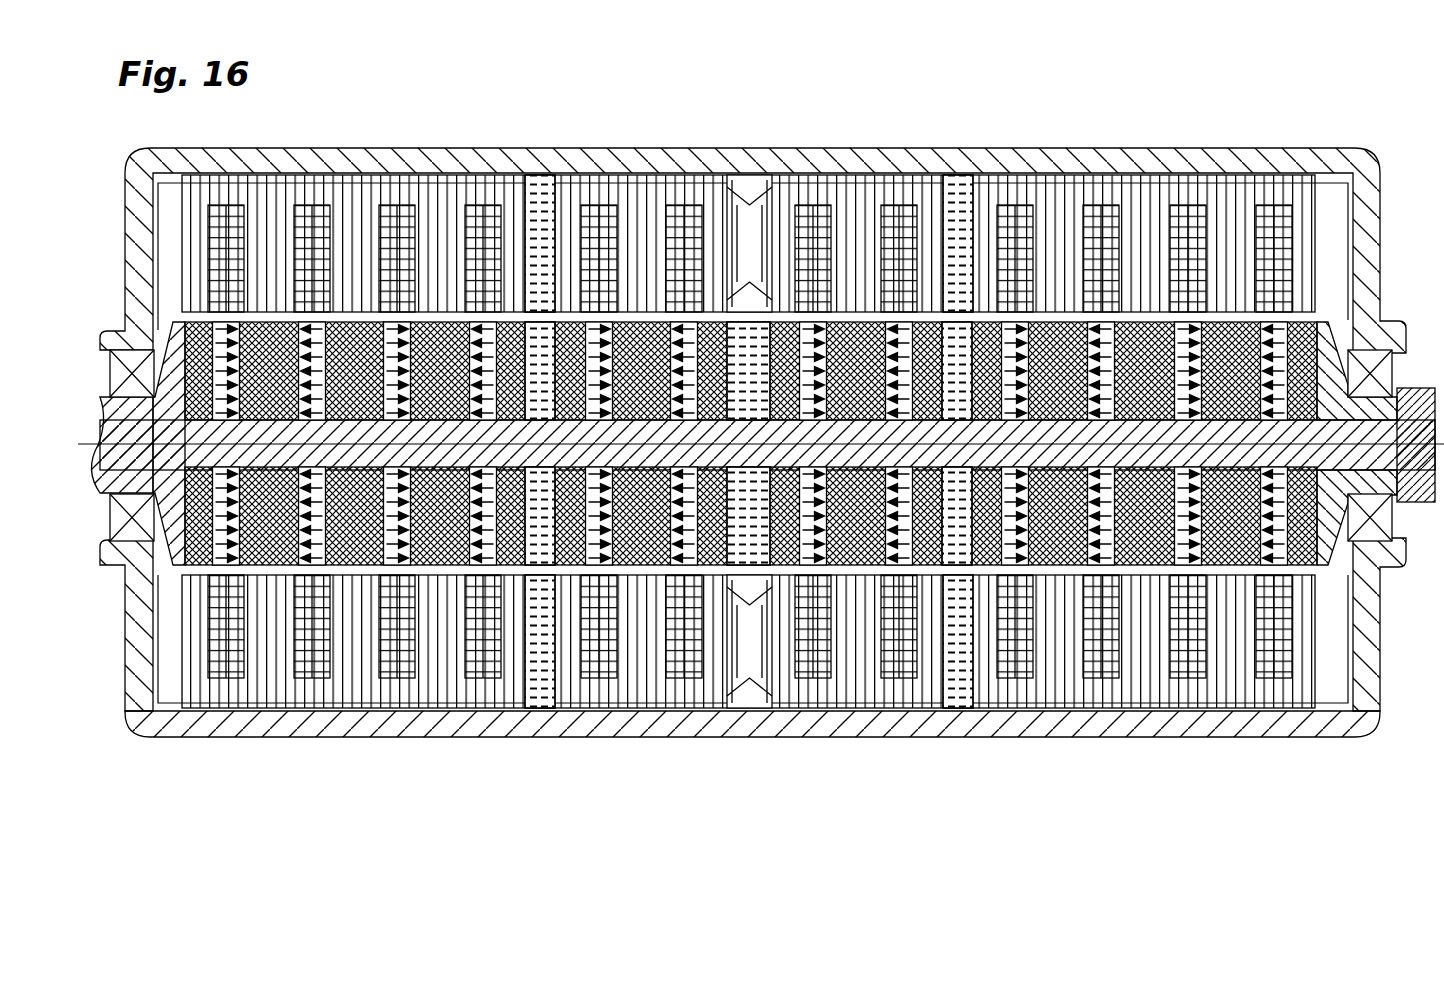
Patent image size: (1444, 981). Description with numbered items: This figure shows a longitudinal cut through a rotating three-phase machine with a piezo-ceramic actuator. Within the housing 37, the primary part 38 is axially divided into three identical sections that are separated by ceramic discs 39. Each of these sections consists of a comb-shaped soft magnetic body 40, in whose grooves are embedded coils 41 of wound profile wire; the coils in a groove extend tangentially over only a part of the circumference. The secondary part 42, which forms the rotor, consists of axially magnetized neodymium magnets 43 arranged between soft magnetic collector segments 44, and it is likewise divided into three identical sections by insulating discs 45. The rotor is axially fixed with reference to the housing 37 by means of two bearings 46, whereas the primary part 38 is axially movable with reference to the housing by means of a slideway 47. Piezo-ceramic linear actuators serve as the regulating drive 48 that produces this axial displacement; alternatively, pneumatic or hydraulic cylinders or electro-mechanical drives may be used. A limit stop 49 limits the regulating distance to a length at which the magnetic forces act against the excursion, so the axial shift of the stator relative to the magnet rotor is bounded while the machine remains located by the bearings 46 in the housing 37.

The housing 37 is at (432, 160).
The primary part 38 is at (548, 175).
The ceramic discs 39 is at (962, 233).
The comb-shaped soft magnetic body 40 is at (1140, 192).
The coils 41 is at (1273, 227).
The secondary part 42 is at (325, 567).
The axially magnetized neodymium magnets 43 is at (480, 500).
The soft magnetic collector segments 44 is at (643, 555).
The insulating discs 45 is at (955, 530).
The bearings 46 is at (1372, 532).
The slideway 47 is at (1335, 705).
The regulating drive 48 is at (755, 640).
The limit stop 49 is at (1352, 248).